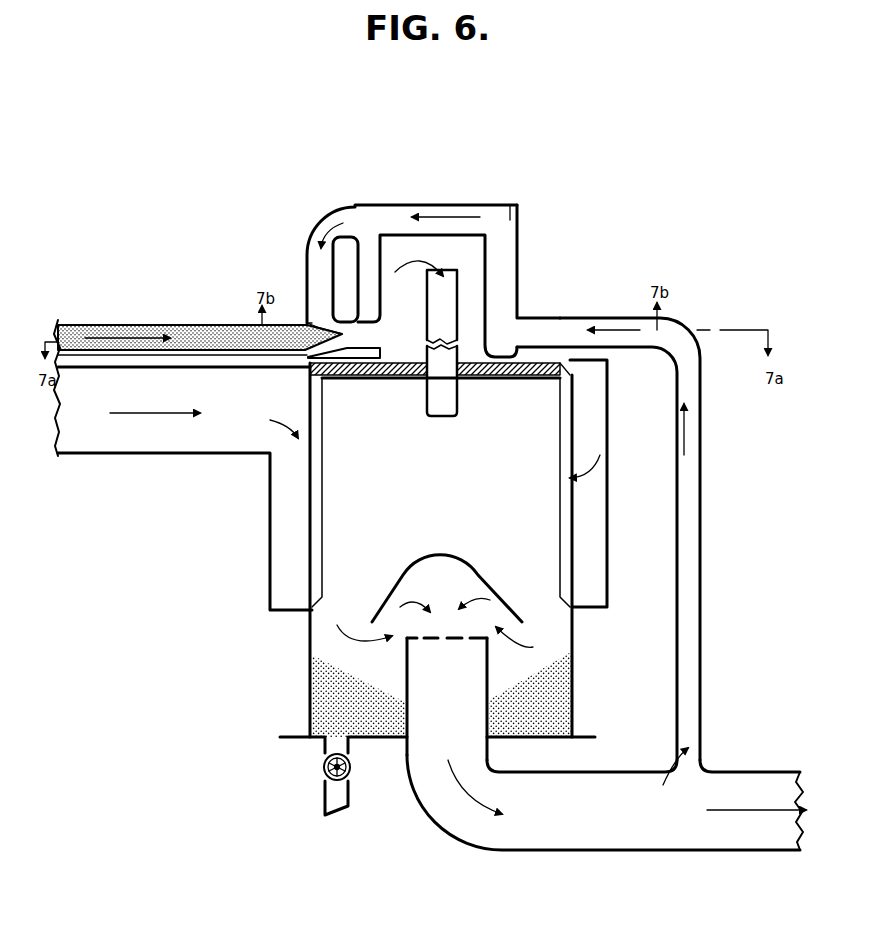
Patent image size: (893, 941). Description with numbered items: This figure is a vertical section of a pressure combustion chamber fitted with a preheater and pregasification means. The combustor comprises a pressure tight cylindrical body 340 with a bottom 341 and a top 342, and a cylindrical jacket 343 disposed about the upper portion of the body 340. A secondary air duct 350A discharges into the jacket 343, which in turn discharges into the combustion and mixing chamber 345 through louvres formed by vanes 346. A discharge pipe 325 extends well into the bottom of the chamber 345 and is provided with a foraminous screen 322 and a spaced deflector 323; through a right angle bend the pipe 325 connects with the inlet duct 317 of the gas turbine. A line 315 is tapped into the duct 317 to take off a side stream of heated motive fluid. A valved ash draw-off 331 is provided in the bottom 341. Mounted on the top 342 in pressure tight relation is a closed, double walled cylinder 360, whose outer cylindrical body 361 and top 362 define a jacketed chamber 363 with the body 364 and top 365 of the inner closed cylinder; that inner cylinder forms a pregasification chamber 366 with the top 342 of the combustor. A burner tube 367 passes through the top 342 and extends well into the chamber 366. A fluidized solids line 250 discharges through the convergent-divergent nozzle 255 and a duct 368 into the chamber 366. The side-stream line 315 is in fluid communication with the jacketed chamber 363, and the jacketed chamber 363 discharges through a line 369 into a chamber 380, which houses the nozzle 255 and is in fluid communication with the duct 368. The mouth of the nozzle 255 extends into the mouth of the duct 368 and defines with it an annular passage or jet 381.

The fluidized solids line 250 is at (247, 322).
The convergent-divergent nozzle 255 is at (302, 353).
The side-stream line 315 is at (617, 294).
The inlet duct 317 is at (640, 752).
The foraminous screen 322 is at (452, 636).
The deflector 323 is at (477, 528).
The discharge pipe 325 is at (452, 693).
The ash draw-off 331 is at (325, 757).
The cylindrical body 340 is at (304, 680).
The bottom 341 is at (565, 739).
The top 342 is at (378, 378).
The cylindrical jacket 343 is at (268, 522).
The combustion and mixing chamber 345 is at (488, 468).
The vanes 346 is at (316, 458).
The secondary air duct 350A is at (240, 447).
The double walled cylinder 360 is at (514, 198).
The outer cylindrical body 361 is at (519, 277).
The top 362 is at (474, 202).
The jacketed chamber 363 is at (409, 202).
The body 364 is at (487, 259).
The top 365 is at (512, 200).
The pregasification chamber 366 is at (476, 259).
The burner tube 367 is at (427, 393).
The duct 368 is at (365, 335).
The line 369 is at (307, 253).
The chamber 380 is at (298, 436).
The annular passage 381 is at (340, 331).